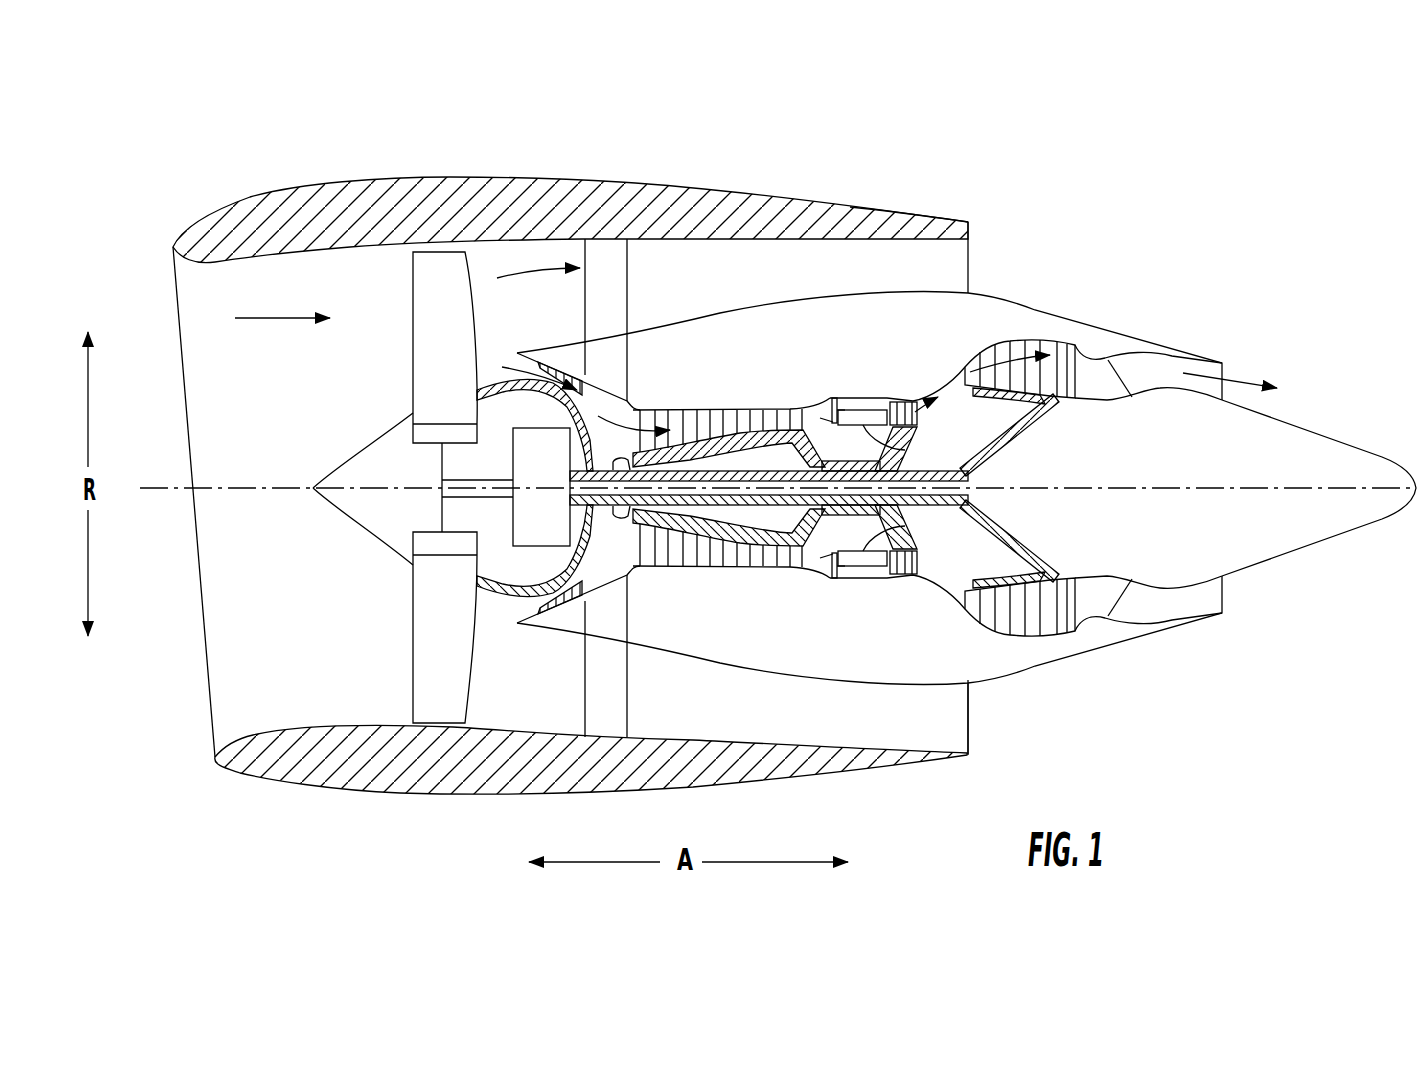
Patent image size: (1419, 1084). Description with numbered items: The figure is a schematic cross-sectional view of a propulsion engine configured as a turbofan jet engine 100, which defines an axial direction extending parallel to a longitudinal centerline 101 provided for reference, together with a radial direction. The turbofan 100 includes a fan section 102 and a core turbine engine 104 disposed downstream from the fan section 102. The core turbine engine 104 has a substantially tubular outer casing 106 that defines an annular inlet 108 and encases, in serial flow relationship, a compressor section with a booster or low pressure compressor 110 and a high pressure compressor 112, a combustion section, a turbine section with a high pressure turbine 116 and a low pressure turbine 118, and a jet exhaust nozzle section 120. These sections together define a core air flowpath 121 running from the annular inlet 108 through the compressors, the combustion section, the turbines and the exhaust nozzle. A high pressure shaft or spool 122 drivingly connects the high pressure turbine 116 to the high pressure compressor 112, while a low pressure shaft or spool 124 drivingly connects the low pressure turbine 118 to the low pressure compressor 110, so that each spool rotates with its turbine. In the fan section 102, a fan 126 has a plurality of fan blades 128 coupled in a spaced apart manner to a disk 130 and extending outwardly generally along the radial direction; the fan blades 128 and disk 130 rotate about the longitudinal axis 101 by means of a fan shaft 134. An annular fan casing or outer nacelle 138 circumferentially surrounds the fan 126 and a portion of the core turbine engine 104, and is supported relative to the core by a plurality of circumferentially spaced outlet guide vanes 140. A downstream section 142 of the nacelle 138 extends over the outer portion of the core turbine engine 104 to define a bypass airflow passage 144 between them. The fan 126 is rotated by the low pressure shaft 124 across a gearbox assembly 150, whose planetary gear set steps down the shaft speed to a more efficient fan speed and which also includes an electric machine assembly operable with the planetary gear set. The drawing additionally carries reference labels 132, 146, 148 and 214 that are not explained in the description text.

The turbofan jet engine 100 is at (1128, 190).
The longitudinal centerline 101 is at (1190, 487).
The fan section 102 is at (362, 268).
The core turbine engine 104 is at (741, 352).
The outer casing 106 is at (810, 677).
The annular inlet 108 is at (528, 606).
The low pressure compressor 110 is at (580, 545).
The high pressure compressor 112 is at (668, 564).
The high pressure turbine 116 is at (922, 570).
The low pressure turbine 118 is at (1058, 636).
The jet exhaust nozzle section 120 is at (1128, 610).
The core air flowpath 121 is at (608, 575).
The high pressure shaft or spool 122 is at (857, 455).
The low pressure shaft or spool 124 is at (918, 471).
The fan 126 is at (375, 550).
The fan blades 128 is at (405, 648).
The disk 130 is at (430, 440).
The spinner 132 is at (330, 508).
The fan shaft 134 is at (468, 482).
The outer nacelle 138 is at (470, 795).
The outlet guide vanes 140 is at (627, 275).
The downstream section of the nacelle 142 is at (898, 215).
The bypass airflow passage 144 is at (848, 271).
The airflow 146 is at (548, 272).
The core inlet 148 is at (513, 352).
The gearbox assembly 150 is at (558, 453).
The combustor fuel nozzle 214 is at (850, 570).